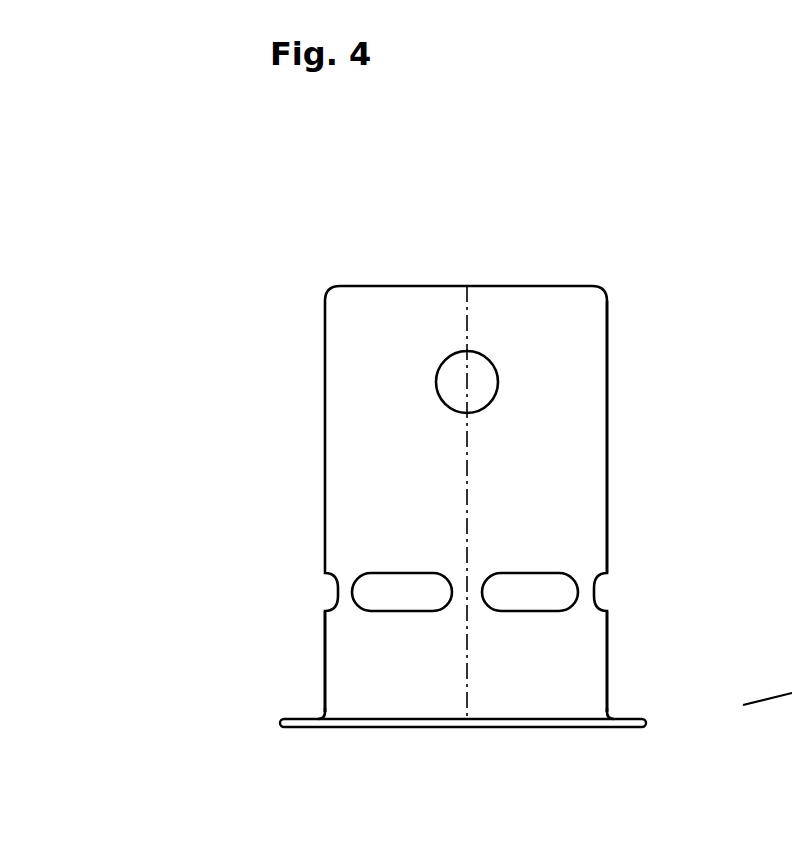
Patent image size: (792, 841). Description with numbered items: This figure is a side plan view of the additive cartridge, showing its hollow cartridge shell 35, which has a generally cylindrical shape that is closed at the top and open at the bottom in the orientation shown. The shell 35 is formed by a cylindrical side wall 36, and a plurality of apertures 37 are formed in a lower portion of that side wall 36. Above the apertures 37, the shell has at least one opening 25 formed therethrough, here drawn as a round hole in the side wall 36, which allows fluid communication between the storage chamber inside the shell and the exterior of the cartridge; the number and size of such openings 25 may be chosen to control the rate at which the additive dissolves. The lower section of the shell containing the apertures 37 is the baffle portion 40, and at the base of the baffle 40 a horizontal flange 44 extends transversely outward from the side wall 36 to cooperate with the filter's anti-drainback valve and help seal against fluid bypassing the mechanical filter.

The opening 25 is at (442, 374).
The cartridge shell 35 is at (642, 312).
The side wall 36 is at (587, 479).
The apertures 37 is at (535, 611).
The baffle portion 40 is at (350, 664).
The flange 44 is at (628, 722).